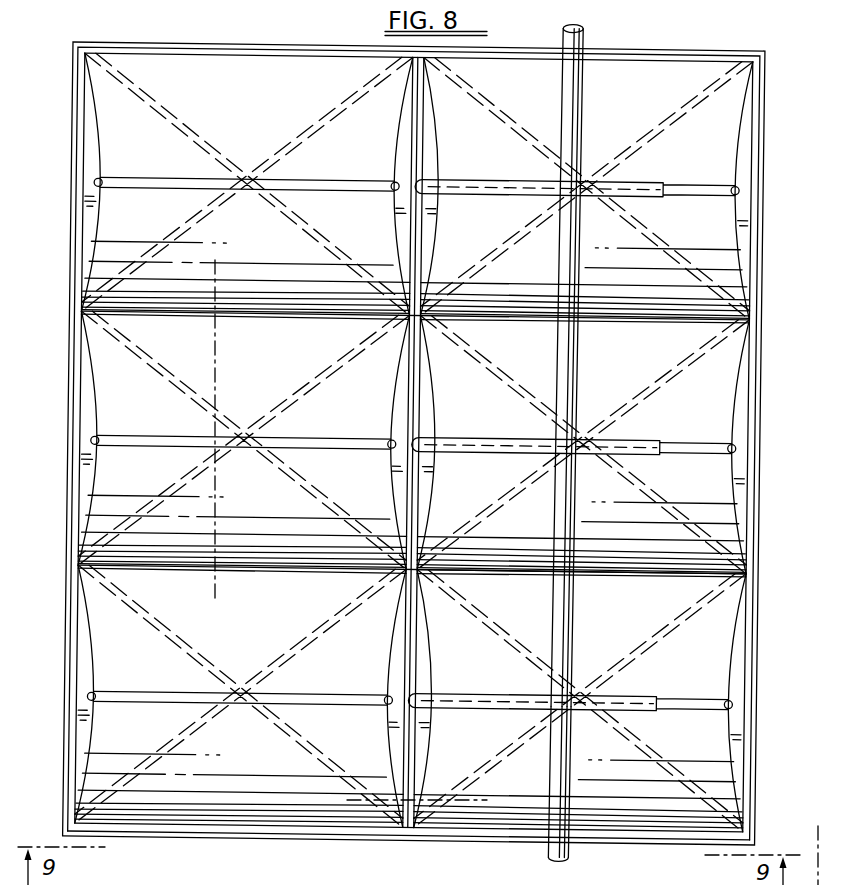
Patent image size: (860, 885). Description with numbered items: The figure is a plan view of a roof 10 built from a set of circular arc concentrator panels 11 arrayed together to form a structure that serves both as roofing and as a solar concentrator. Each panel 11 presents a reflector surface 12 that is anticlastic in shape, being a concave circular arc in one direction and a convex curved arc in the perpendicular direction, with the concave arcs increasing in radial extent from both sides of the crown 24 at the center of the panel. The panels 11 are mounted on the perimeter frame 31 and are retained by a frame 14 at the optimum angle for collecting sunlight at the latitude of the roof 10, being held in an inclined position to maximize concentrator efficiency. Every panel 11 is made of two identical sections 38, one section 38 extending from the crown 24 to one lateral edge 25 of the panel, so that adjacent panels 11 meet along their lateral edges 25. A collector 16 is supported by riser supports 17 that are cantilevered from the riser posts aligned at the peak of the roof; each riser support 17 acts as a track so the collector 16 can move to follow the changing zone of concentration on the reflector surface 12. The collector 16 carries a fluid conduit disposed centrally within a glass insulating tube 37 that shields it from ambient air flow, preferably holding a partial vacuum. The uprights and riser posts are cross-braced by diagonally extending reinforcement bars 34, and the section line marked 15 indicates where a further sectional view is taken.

The roof 10 is at (266, 41).
The circular arc concentrator panel 11 is at (720, 159).
The reflector surface 12 is at (230, 282).
The frame 14 is at (694, 43).
The section line 15- 15 is at (357, 800).
The collector 16 is at (580, 34).
The riser support 17 is at (633, 440).
The crown 24 is at (706, 450).
The lateral edge 25 is at (728, 569).
The perimeter frame 31 is at (177, 837).
The reinforcement bar 34 is at (505, 640).
The glass insulating tube 37 is at (565, 815).
The section 38 is at (715, 655).